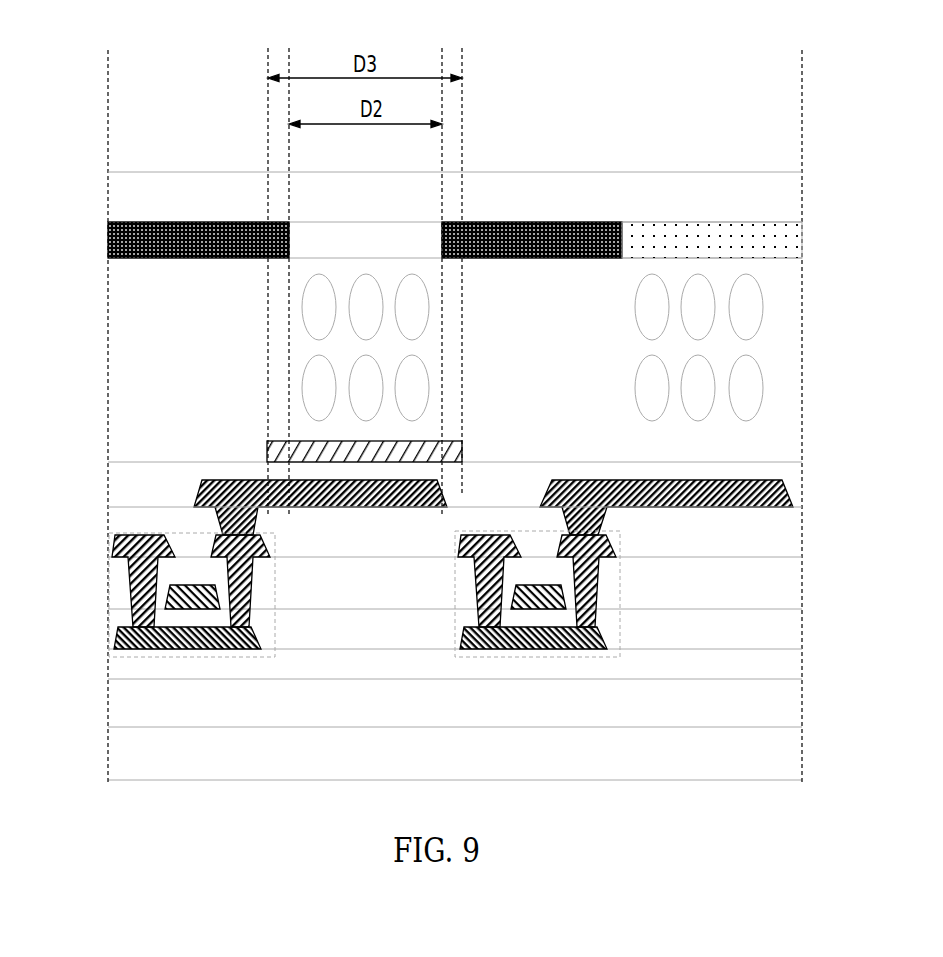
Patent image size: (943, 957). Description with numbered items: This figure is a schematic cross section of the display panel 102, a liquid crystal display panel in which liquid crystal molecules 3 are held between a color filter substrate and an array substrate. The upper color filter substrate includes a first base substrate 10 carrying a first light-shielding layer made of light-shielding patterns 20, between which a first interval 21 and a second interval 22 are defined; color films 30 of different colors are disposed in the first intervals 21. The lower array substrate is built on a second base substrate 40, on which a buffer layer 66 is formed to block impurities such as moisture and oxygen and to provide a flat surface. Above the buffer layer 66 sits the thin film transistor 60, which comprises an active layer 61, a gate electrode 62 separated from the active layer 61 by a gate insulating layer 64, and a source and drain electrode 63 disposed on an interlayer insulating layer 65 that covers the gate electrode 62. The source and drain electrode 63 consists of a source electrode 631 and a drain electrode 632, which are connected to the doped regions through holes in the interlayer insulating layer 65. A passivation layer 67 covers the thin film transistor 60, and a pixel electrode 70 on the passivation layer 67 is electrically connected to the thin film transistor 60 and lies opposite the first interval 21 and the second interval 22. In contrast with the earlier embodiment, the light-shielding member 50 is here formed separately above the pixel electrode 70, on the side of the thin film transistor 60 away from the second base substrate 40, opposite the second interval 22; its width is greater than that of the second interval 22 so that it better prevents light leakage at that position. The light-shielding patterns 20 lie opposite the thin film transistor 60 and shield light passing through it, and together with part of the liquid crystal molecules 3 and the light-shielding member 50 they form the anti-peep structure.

The display panel 102 is at (228, 40).
The first base substrate 10 is at (568, 192).
The light-shielding patterns 20 is at (493, 222).
The first interval 21 is at (737, 240).
The second interval 22 is at (330, 240).
The color films 30 is at (643, 233).
The liquid crystal molecules 3 is at (750, 377).
The light-shielding member 50 is at (360, 447).
The pixel electrode 70 is at (197, 492).
The passivation layer 67 is at (777, 538).
The interlayer insulating layer 65 is at (777, 592).
The gate insulating layer 64 is at (777, 633).
The buffer layer 66 is at (777, 668).
The second base substrate 40 is at (777, 708).
The thin film transistor 60 is at (187, 657).
The active layer 61 is at (117, 642).
The gate electrode 62 is at (168, 597).
The source and drain electrode 63 is at (316, 569).
The source electrode 631 is at (133, 567).
The drain electrode 632 is at (223, 543).